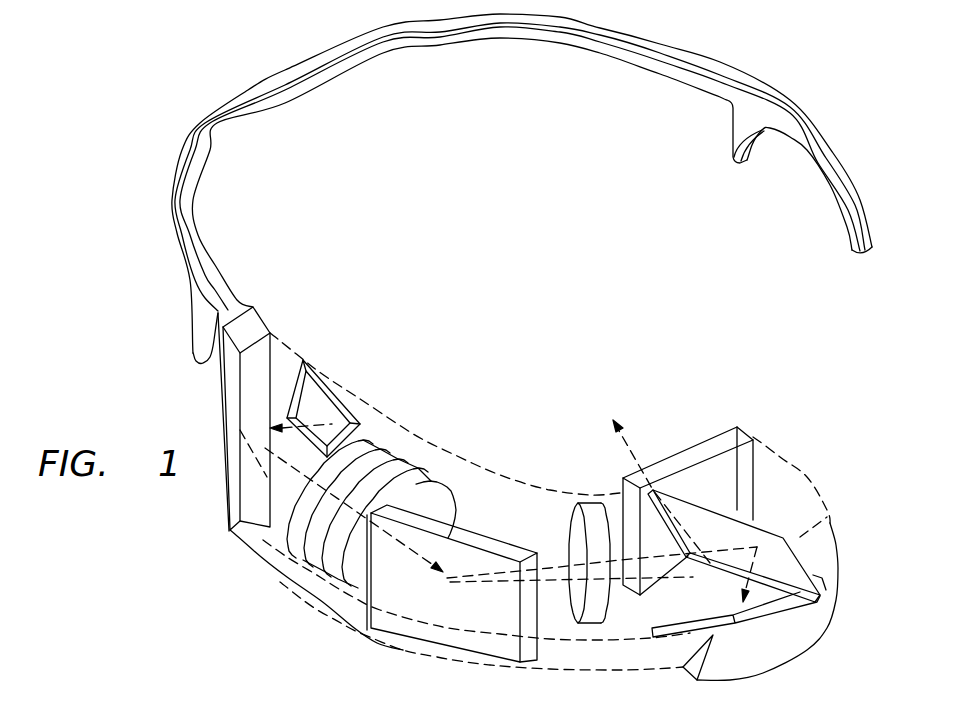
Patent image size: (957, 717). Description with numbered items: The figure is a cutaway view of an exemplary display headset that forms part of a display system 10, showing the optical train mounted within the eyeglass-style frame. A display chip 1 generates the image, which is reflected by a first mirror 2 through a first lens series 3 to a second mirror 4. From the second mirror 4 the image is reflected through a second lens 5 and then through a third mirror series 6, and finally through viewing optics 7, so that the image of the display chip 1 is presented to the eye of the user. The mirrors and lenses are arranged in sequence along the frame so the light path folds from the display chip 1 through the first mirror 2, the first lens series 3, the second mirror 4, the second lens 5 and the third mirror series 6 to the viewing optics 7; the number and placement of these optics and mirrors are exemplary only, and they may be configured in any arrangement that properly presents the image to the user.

The display system 10 is at (215, 72).
The display chip 1 is at (338, 400).
The first mirror 2 is at (257, 325).
The first lens series 3 is at (405, 452).
The second mirror 4 is at (477, 540).
The second lens 5 is at (585, 500).
The third mirror series 6 is at (767, 538).
The viewing optics 7 is at (683, 450).